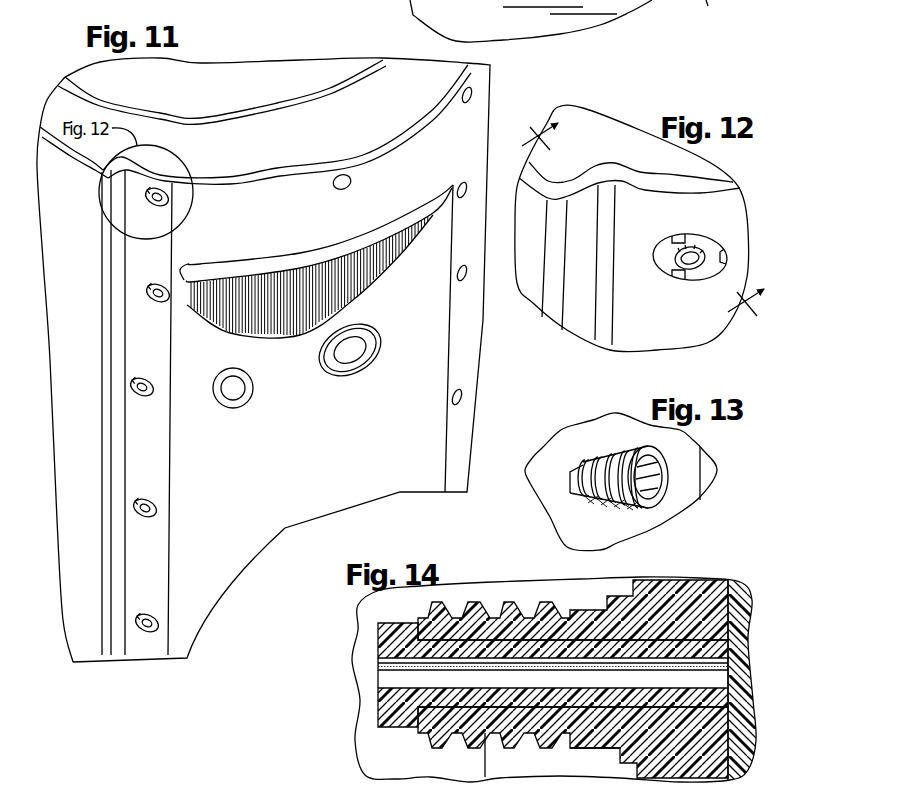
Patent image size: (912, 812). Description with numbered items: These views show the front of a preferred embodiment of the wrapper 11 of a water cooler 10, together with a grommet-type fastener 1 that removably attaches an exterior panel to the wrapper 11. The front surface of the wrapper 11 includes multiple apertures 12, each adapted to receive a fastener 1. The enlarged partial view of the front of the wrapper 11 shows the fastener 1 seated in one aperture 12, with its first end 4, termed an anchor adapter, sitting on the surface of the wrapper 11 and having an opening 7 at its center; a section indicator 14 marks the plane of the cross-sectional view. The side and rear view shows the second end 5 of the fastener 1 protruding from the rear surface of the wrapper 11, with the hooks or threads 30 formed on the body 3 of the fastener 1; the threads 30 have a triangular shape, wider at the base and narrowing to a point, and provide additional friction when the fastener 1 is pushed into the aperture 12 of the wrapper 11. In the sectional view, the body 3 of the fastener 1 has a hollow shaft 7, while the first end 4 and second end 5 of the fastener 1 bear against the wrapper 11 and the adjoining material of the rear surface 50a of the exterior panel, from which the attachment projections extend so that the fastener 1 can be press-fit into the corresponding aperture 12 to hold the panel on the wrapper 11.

In FIG. 11, the water cooler 10 is at (42, 322).
In FIG. 11, the wrapper 11 is at (80, 258).
In FIG. 12, the wrapper 11 is at (718, 208).
In FIG. 11, the apertures 12 is at (463, 400).
In FIG. 11, the first end (anchor adapter) 4 is at (140, 395).
In FIG. 12, the first end (anchor adapter) 4 is at (705, 285).
In FIG. 14, the first end (anchor adapter) 4 is at (378, 677).
In FIG. 12, the hollow shaft 7 is at (690, 248).
In FIG. 14, the hollow shaft 7 is at (722, 680).
In FIG. 12, the section line 14 is at (656, 219).
In FIG. 13, the hooks or threads 30 is at (606, 456).
In FIG. 14, the hooks or threads 30 is at (505, 744).
In FIG. 13, the second end 5 is at (668, 470).
In FIG. 14, the second end 5 is at (430, 728).
In FIG. 13, the rear surface of exterior panel 50a is at (680, 494).
In FIG. 14, the rear surface of exterior panel 50a is at (730, 730).
In FIG. 13, the body 3 is at (616, 508).
In FIG. 14, the body 3 is at (483, 616).
In FIG. 14, the fastener 1 is at (554, 752).